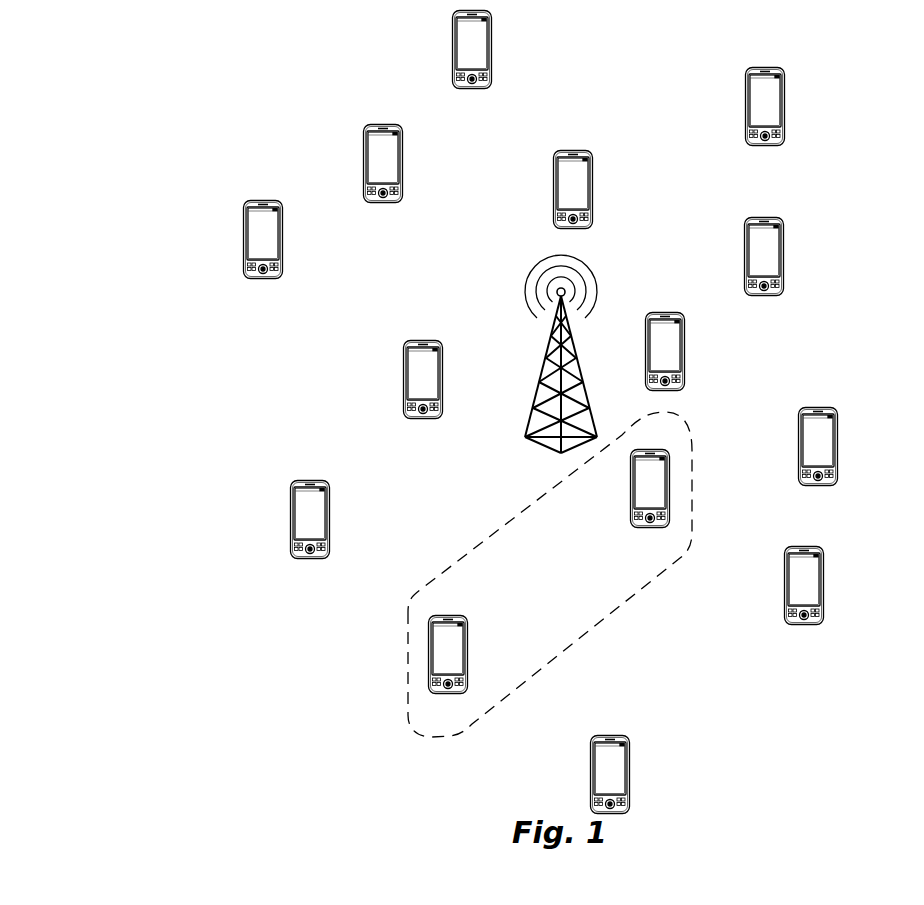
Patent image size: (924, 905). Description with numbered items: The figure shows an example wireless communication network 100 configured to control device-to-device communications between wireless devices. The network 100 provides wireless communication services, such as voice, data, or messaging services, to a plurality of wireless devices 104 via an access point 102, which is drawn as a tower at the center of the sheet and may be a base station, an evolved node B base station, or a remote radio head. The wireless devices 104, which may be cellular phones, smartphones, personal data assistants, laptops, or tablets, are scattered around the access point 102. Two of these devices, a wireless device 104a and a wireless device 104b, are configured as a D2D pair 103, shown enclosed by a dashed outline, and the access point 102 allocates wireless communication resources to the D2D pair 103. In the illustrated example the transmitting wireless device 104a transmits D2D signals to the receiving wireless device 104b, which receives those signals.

The wireless communication network 100 is at (117, 70).
The access point 102 is at (540, 380).
The D2D pair 103 is at (671, 574).
The wireless device 104 is at (452, 54).
The transmitting wireless device 104a is at (670, 486).
The receiving wireless device 104b is at (428, 652).